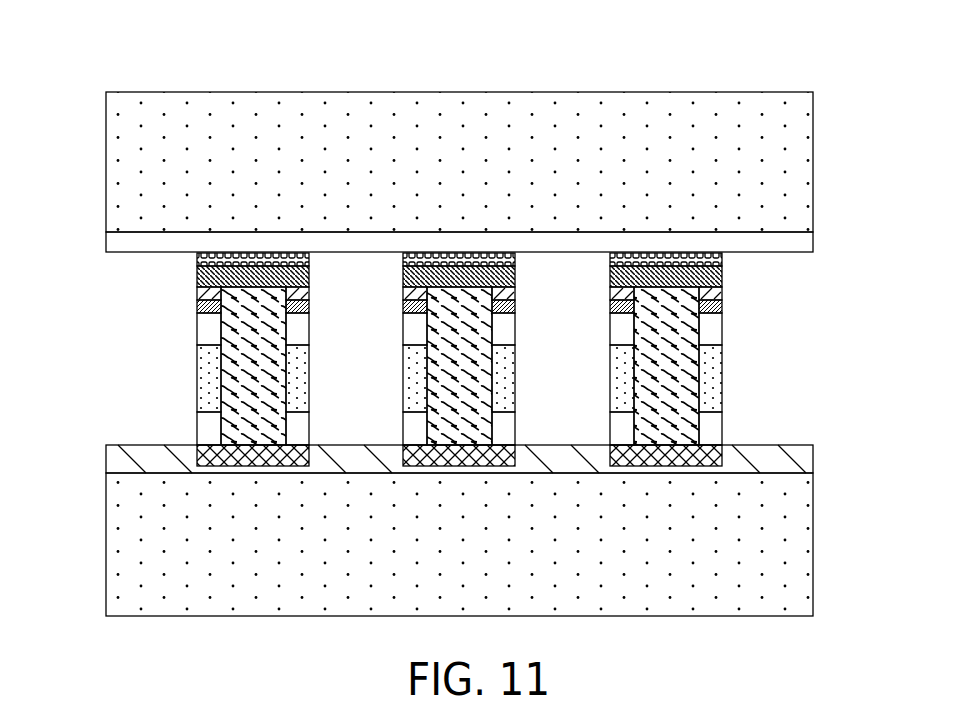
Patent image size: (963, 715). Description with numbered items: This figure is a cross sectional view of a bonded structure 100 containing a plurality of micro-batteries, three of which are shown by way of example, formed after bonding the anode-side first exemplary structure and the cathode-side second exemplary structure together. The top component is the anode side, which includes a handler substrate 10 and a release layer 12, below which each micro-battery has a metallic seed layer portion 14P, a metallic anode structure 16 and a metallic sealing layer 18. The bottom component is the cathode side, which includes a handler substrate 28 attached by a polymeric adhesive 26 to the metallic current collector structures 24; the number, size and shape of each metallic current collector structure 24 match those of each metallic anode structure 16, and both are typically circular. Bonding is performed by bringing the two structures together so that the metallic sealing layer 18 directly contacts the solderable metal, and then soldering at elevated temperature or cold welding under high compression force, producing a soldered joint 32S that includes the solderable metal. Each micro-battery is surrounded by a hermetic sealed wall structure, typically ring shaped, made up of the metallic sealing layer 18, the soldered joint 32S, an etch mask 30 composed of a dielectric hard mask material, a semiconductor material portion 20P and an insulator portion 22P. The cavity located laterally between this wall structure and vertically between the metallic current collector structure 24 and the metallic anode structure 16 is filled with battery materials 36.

The bonded structure 100 is at (112, 55).
The handler substrate 10 is at (800, 138).
The release layer 12 is at (803, 239).
The metallic seed layer portion 14P is at (197, 260).
The metallic anode structure 16 is at (197, 275).
The metallic sealing layer 18 is at (197, 292).
The soldered joint 32S is at (722, 308).
The etch mask 30 is at (714, 330).
The semiconductor material portion 20P is at (710, 378).
The insulator portion 22P is at (714, 432).
The battery materials 36 is at (440, 380).
The metallic current collector structure 24 is at (245, 460).
The polymeric adhesive 26 is at (112, 457).
The handler substrate 28 is at (790, 537).